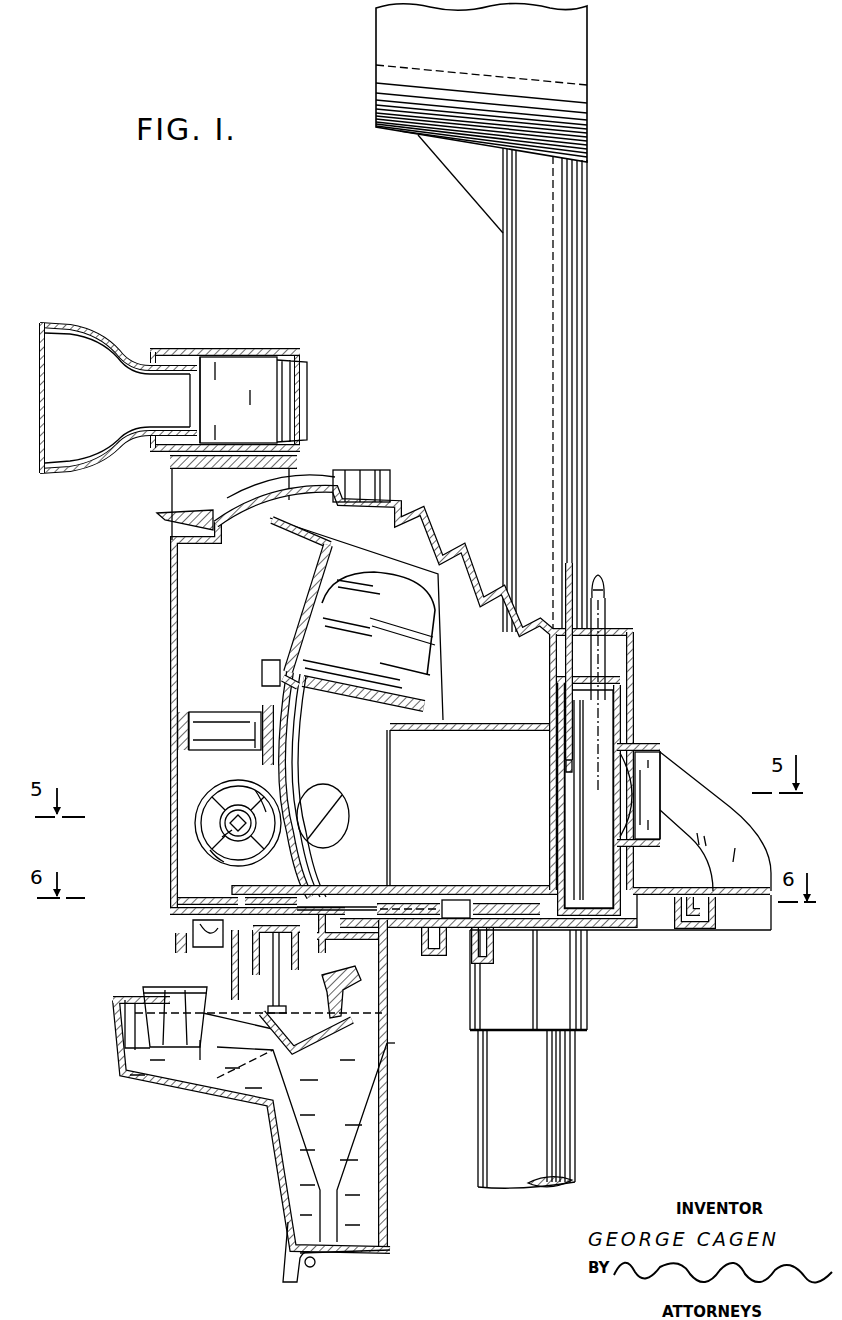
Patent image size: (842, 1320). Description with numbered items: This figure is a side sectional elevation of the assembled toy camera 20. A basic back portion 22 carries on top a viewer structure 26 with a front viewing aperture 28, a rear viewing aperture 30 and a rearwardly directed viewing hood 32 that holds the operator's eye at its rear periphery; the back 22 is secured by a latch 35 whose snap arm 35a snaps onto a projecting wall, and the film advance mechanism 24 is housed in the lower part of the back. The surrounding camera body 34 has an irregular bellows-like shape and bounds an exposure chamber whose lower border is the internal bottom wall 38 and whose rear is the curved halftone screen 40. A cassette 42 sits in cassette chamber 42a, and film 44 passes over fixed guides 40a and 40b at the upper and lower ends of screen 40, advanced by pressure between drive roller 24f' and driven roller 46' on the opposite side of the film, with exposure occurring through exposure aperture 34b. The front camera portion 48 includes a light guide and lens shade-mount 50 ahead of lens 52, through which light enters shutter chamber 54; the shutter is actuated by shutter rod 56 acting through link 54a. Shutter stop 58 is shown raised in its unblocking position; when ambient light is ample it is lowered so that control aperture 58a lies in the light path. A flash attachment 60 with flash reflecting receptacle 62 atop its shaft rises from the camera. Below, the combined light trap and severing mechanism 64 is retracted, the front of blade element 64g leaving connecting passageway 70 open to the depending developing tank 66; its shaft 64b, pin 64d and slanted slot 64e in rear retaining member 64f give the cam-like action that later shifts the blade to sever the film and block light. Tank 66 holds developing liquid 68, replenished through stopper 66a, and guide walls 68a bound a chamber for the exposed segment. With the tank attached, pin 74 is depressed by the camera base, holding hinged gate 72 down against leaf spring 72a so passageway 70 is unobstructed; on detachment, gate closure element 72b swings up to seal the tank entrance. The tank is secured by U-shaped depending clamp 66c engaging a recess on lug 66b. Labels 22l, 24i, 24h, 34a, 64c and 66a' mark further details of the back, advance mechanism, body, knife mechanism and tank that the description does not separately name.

The camera 20 is at (672, 470).
The back portion 22 is at (171, 618).
The housing lip 22l is at (218, 518).
The film advance mechanism 24 is at (232, 788).
The drive advance roller 24f' is at (196, 816).
The valve hub 24i is at (225, 823).
The valve spoke 24h is at (222, 840).
The viewer structure 26 is at (222, 348).
The front viewing aperture 28 is at (309, 370).
The rear viewing aperture 30 is at (192, 380).
The viewing hood 32 is at (88, 330).
The camera body 34 is at (440, 532).
The partition plate 34a is at (450, 745).
The exposure aperture 34b is at (560, 755).
The latch 35 is at (375, 470).
The snap arm 35a is at (175, 518).
The internal bottom wall 38 is at (362, 884).
The curved halftone screen 40 is at (304, 714).
The fixed guide 40a is at (310, 678).
The fixed guide 40b is at (312, 885).
The cassette 42 is at (427, 650).
The cassette chamber 42a is at (420, 560).
The film 44 is at (270, 684).
The driven roller 46' is at (328, 797).
The front camera portion 48 is at (636, 636).
The light guide and lens shade-mount 50 is at (658, 752).
The lens 52 is at (635, 802).
The shutter chamber 54 is at (597, 915).
The link 54a is at (582, 845).
The shutter rod 56 is at (604, 600).
The shutter stop 58 is at (572, 580).
The control aperture 58a is at (563, 746).
The flash attachment 60 is at (572, 318).
The flash reflecting receptacle 62 is at (592, 96).
The combined light trap and severing mechanism 64 is at (448, 898).
The blade element 64g is at (428, 900).
The shaft 64b is at (488, 942).
The valve outlet 64c is at (485, 962).
The pin 64d is at (460, 900).
The slanted slot 64e is at (486, 902).
The rear retaining member 64f is at (520, 903).
The developing tank 66 is at (278, 1140).
The stopper 66a is at (160, 996).
The reservoir lip 66a' is at (116, 1024).
The lug 66b is at (285, 1235).
The U-shaped depending clamp 66c is at (316, 1266).
The developing liquid 68 is at (375, 1128).
The guide walls 68a is at (375, 1092).
The connecting passageway 70 is at (316, 940).
The hinged gate 72 is at (326, 1040).
The leaf spring 72a is at (230, 1000).
The gate closure element 72b is at (360, 975).
The pin 74 is at (281, 990).